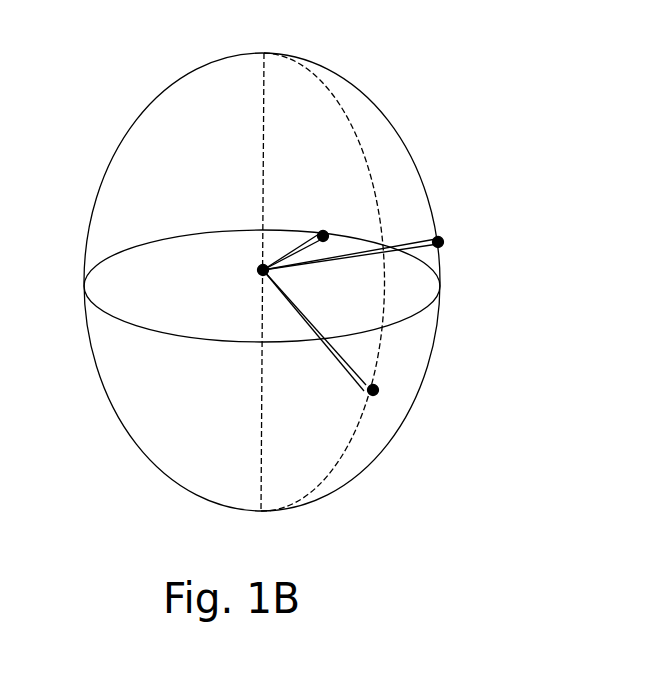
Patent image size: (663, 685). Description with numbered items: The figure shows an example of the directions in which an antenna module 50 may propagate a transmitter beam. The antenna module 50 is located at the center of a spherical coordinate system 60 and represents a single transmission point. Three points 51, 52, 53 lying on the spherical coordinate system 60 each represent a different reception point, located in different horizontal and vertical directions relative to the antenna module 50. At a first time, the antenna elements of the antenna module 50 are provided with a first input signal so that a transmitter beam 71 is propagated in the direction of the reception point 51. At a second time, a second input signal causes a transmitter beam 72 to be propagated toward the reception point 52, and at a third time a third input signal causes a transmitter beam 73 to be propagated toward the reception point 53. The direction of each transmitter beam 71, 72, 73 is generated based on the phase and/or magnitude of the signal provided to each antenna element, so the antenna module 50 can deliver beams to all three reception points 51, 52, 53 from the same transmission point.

The spherical coordinate system 60 is at (265, 53).
The antenna module 50 is at (259, 265).
The reception point 51 is at (322, 231).
The reception point 52 is at (442, 247).
The reception point 53 is at (380, 392).
The transmitter beam 71 is at (290, 250).
The transmitter beam 72 is at (442, 237).
The transmitter beam 73 is at (335, 346).